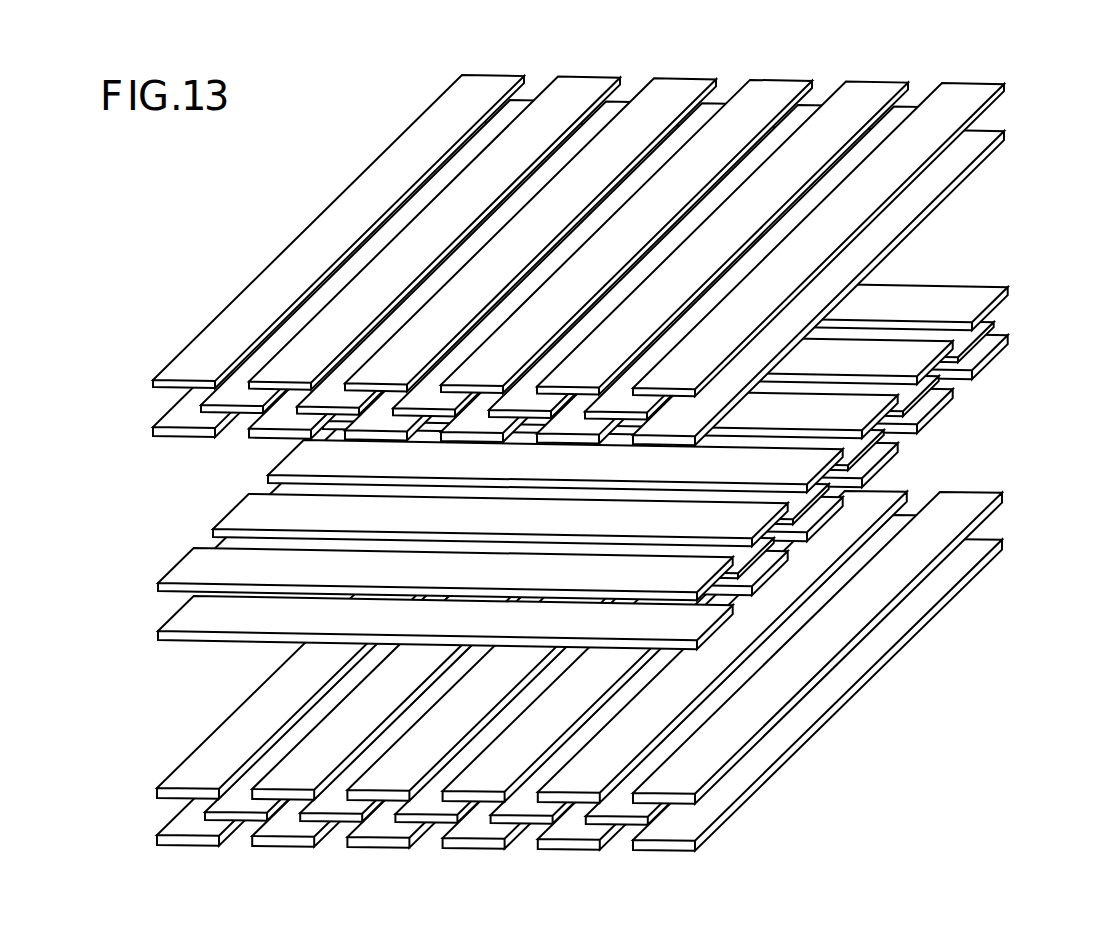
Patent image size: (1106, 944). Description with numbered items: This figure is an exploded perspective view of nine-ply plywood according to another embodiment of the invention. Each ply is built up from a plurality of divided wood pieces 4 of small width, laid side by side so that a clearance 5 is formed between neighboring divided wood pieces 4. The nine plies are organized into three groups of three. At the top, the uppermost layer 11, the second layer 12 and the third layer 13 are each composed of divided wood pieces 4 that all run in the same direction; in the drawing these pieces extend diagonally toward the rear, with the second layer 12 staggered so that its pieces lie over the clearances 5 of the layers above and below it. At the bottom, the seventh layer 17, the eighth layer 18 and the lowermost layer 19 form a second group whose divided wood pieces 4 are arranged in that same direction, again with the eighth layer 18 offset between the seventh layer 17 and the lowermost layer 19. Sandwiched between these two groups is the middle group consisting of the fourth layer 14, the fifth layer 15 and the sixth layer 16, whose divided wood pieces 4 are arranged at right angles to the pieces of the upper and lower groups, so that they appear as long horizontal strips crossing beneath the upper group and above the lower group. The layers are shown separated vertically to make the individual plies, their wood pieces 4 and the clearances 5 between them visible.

The divided wood pieces 4 is at (581, 464).
The clearance 5 is at (582, 464).
The uppermost layer 11 is at (150, 379).
The second layer 12 is at (198, 407).
The third layer 13 is at (148, 433).
The fourth layer 14 is at (1015, 281).
The fifth layer 15 is at (991, 321).
The sixth layer 16 is at (1016, 336).
The seventh layer 17 is at (151, 792).
The eighth layer 18 is at (201, 815).
The lowermost layer 19 is at (151, 841).